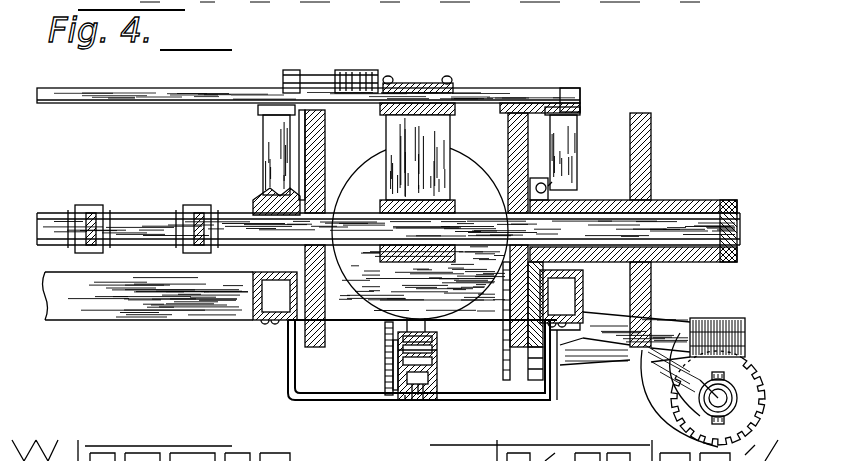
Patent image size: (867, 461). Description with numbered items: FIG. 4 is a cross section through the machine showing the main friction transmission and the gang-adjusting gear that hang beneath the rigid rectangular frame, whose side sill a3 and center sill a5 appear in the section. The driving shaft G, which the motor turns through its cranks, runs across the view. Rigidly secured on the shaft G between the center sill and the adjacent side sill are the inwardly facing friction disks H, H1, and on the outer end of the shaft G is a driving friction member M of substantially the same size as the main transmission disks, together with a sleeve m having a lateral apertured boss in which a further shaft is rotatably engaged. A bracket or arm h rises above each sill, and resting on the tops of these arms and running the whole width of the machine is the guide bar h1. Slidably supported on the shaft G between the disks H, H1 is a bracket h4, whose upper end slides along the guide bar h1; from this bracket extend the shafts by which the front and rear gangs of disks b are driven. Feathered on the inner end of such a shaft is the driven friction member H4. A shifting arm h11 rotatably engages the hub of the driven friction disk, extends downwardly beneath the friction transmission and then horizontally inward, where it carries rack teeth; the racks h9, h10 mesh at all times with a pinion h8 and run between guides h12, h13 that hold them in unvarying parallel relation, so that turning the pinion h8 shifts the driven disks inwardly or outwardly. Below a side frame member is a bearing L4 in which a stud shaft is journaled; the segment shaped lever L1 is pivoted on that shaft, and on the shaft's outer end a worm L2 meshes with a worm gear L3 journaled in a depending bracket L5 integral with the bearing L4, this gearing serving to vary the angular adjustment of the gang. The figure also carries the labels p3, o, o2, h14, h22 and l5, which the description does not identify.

The part p3 is at (28, 14).
The rod o is at (343, 2).
The rod o2 is at (378, 16).
The disk b is at (692, 4).
The bracket h14 is at (316, 82).
The bracket h4 is at (427, 150).
The guide bar h1 is at (520, 97).
The bracket or arm h is at (572, 200).
The driving friction member M is at (657, 125).
The sleeve m is at (688, 205).
The driving shaft G is at (740, 232).
The friction disk H is at (308, 134).
The driven friction member H4 is at (358, 183).
The friction disk H1 is at (510, 137).
The segment shaped lever L1 is at (548, 186).
The center sill a5 is at (277, 293).
The pinion h8 is at (440, 362).
The rack h9 is at (438, 338).
The shifting arm h11 is at (438, 352).
The spring h22 is at (382, 347).
The guide h12 is at (390, 377).
The rack h10 is at (404, 395).
The guide h13 is at (418, 384).
The side sill a3 is at (578, 287).
The bearing L4 is at (618, 345).
The worm L2 is at (722, 318).
The depending bracket L5 is at (670, 380).
The worm gear L3 is at (743, 377).
The pawl l5 is at (718, 398).